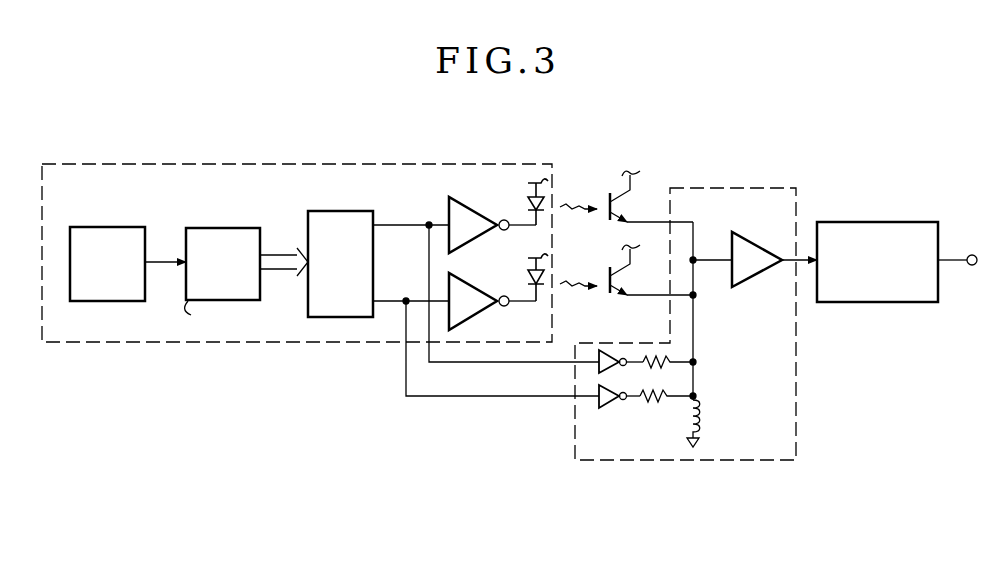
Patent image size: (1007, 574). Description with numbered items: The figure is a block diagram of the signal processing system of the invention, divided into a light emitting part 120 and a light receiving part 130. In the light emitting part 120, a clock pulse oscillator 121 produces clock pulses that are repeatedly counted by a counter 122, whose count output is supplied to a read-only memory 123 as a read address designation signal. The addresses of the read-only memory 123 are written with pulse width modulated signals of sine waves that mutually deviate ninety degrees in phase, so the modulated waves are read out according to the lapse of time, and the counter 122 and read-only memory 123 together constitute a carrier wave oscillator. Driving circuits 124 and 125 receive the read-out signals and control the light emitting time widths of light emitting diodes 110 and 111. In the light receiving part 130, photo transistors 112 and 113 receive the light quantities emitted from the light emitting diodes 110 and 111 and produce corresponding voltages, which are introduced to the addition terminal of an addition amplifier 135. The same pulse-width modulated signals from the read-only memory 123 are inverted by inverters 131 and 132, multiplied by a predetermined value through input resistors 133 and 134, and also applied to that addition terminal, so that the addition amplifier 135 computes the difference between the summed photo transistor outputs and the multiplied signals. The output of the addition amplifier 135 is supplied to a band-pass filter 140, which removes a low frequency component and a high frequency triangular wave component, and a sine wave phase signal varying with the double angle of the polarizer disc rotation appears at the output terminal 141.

The light emitting diode 110 is at (525, 207).
The light emitting diode 111 is at (526, 280).
The photo transistor 112 is at (605, 201).
The photo transistor 113 is at (605, 275).
The light emitting part 120 is at (445, 164).
The clock pulse oscillator 121 is at (113, 227).
The counter 122 is at (231, 228).
The read-only memory 123 is at (350, 211).
The driving circuit 124 is at (470, 197).
The driving circuit 125 is at (480, 317).
The light receiving part 130 is at (742, 188).
The inverter 131 is at (605, 345).
The inverter 132 is at (605, 406).
The input resistor 133 is at (665, 352).
The input resistor 134 is at (655, 404).
The addition amplifier 135 is at (758, 240).
The band-pass filter 140 is at (897, 222).
The output terminal 141 is at (972, 255).